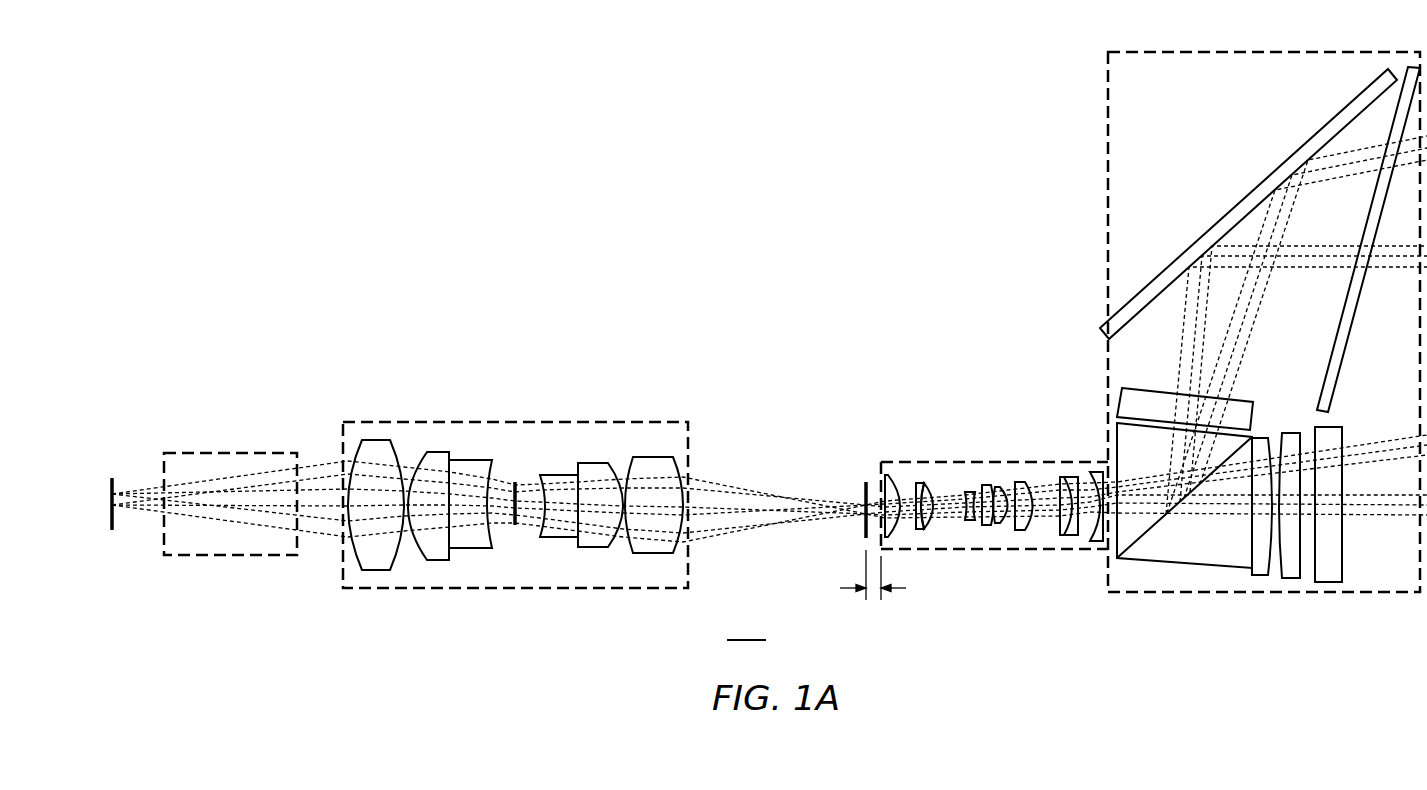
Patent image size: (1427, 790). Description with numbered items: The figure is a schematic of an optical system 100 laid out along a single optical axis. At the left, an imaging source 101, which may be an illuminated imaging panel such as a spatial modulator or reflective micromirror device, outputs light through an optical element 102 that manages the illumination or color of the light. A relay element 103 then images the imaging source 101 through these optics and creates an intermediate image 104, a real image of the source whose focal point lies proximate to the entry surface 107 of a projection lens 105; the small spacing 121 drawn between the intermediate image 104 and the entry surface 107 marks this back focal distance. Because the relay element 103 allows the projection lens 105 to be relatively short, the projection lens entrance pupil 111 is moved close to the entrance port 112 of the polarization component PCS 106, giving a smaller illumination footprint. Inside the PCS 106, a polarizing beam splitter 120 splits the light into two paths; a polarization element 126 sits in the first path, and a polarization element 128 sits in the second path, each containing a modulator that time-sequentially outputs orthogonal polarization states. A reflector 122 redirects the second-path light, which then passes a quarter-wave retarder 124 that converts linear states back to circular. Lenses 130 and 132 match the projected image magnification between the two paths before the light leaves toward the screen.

The optical system 100 is at (746, 626).
The imaging source 101 is at (118, 531).
The optical element 102 is at (228, 452).
The relay element 103 is at (505, 421).
The intermediate image 104 is at (862, 535).
The projection lens 105 is at (994, 477).
The PCS 106 is at (1108, 135).
The entry surface 107 is at (881, 468).
The projection lens entrance pupil 111 is at (893, 478).
The entrance port 112 is at (1098, 466).
The polarizing beam splitter 120 is at (1197, 566).
The spacing 121 is at (872, 600).
The reflector 122 is at (1220, 216).
The quarter-wave retarder 124 is at (1393, 120).
The polarization element 126 is at (1345, 549).
The polarization element 128 is at (1247, 401).
The lens 130 is at (1290, 580).
The lens 132 is at (1328, 583).